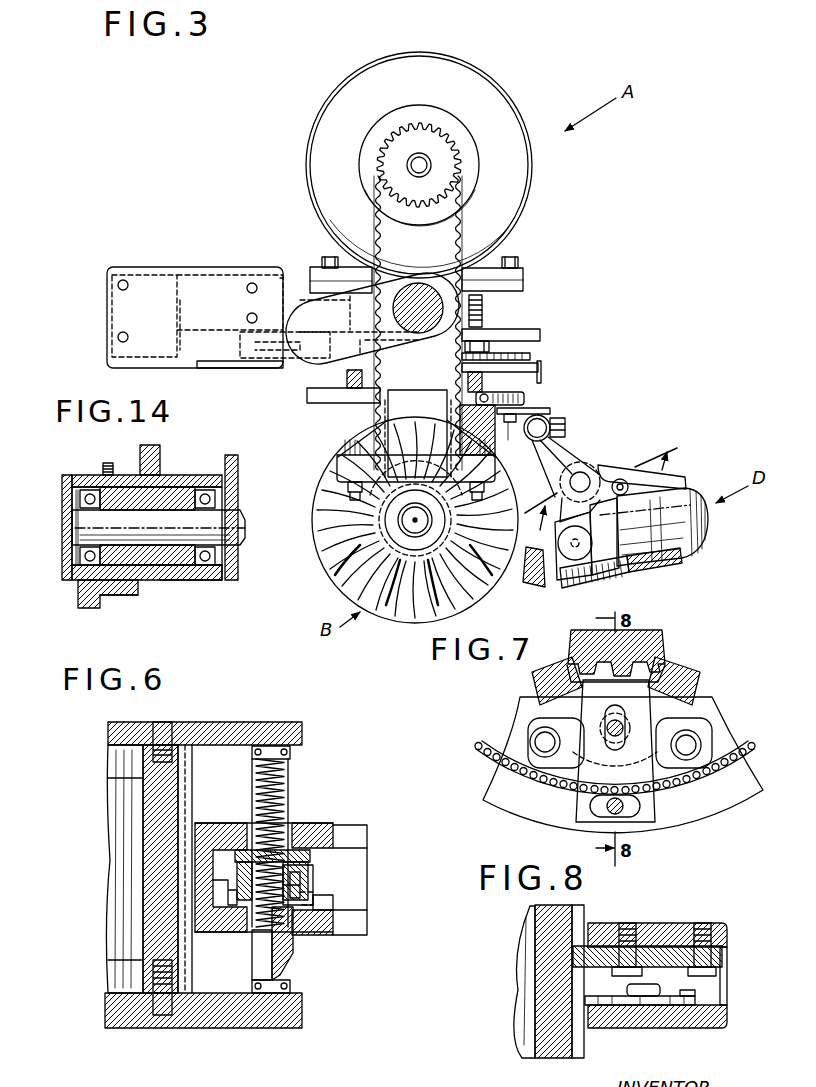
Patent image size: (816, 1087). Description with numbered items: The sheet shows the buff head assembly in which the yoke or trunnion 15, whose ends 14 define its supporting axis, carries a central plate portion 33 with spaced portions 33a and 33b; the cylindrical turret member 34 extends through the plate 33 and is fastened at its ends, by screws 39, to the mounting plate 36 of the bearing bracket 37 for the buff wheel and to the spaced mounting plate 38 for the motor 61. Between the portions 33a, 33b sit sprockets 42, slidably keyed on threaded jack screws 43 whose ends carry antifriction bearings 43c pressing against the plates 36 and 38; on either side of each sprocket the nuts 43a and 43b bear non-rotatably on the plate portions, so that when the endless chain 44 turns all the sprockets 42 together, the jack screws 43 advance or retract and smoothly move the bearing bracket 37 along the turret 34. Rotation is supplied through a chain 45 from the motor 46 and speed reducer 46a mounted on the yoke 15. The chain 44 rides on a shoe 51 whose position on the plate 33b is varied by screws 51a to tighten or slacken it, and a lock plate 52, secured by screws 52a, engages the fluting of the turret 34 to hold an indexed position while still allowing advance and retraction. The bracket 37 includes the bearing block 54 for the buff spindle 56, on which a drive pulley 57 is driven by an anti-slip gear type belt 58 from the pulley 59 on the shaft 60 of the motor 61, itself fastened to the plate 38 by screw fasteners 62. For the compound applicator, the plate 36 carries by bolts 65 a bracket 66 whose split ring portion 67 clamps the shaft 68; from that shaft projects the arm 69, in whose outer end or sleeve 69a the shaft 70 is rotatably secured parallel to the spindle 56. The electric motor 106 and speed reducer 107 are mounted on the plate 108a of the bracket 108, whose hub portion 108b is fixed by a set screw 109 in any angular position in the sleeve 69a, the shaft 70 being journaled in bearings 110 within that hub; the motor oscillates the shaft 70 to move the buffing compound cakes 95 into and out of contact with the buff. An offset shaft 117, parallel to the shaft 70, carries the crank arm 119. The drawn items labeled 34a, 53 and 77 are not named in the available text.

In FIG. 3, the yoke ends 14 is at (424, 330).
In FIG. 7, the yoke or trunnion 15 is at (704, 682).
In FIG. 6, the central plate portion 33 is at (372, 867).
In FIG. 6, the plate portion 33a is at (330, 824).
In FIG. 8, the plate portion 33a is at (688, 923).
In FIG. 6, the plate portion 33b is at (333, 933).
In FIG. 7, the plate portion 33b is at (727, 800).
In FIG. 8, the plate portion 33b is at (729, 1016).
In FIG. 6, the cylindrical turret member 34 is at (140, 813).
In FIG. 7, the cylindrical turret member 34 is at (672, 642).
In FIG. 8, the cylindrical turret member 34 is at (517, 936).
In FIG. 3, the bar 34a is at (526, 399).
In FIG. 3, the mounting plate 36 is at (322, 399).
In FIG. 6, the mounting plate 36 is at (228, 1023).
In FIG. 3, the bearing bracket 37 is at (417, 452).
In FIG. 3, the mounting plate 38 is at (524, 290).
In FIG. 6, the mounting plate 38 is at (245, 723).
In FIG. 6, the screws 39 is at (172, 725).
In FIG. 3, the sprockets 42 is at (490, 347).
In FIG. 6, the sprockets 42 is at (318, 889).
In FIG. 3, the threaded jack screws 43 is at (350, 307).
In FIG. 6, the threaded jack screws 43 is at (289, 788).
In FIG. 6, the nut 43a is at (310, 859).
In FIG. 6, the nut 43b is at (335, 917).
In FIG. 6, the antifriction bearings 43c is at (291, 753).
In FIG. 3, the endless chain 44 is at (531, 357).
In FIG. 7, the endless chain 44 is at (505, 767).
In FIG. 8, the endless chain 44 is at (700, 1001).
In FIG. 3, the chain 45 is at (318, 356).
In FIG. 3, the motor 46 is at (126, 352).
In FIG. 3, the speed reducer 46a is at (212, 246).
In FIG. 7, the shoe 51 is at (690, 722).
In FIG. 8, the shoe 51 is at (648, 1005).
In FIG. 7, the screws 51a is at (545, 742).
In FIG. 8, the screws 51a is at (646, 990).
In FIG. 7, the lock plate 52 is at (625, 702).
In FIG. 8, the lock plate 52 is at (726, 959).
In FIG. 7, the screws 52a is at (608, 726).
In FIG. 8, the screws 52a is at (636, 922).
In FIG. 6, the plate 53 is at (190, 773).
In FIG. 7, the plate 53 is at (663, 673).
In FIG. 8, the plate 53 is at (580, 919).
In FIG. 3, the bearing block 54 is at (326, 552).
In FIG. 3, the buff spindle 56 is at (403, 533).
In FIG. 3, the drive pulley 57 is at (441, 486).
In FIG. 3, the anti-slip gear type belt 58 is at (384, 238).
In FIG. 3, the pulley 59 is at (408, 190).
In FIG. 3, the motor shaft 60 is at (414, 166).
In FIG. 3, the motor 61 is at (326, 101).
In FIG. 3, the screw fasteners 62 is at (326, 258).
In FIG. 3, the bolts 65 is at (509, 422).
In FIG. 3, the bracket 66 is at (552, 411).
In FIG. 3, the split ring portion 67 is at (566, 430).
In FIG. 3, the shaft 68 is at (556, 467).
In FIG. 3, the arm 69 is at (567, 454).
In FIG. 14, the arm 69 is at (78, 607).
In FIG. 3, the outer end / sleeve 69a is at (595, 511).
In FIG. 14, the outer end / sleeve 69a is at (123, 596).
In FIG. 3, the shaft 70 is at (583, 480).
In FIG. 14, the shaft 70 is at (231, 522).
In FIG. 14, the housing wall 77 is at (238, 462).
In FIG. 3, the buffing compound cakes 95 is at (533, 575).
In FIG. 3, the electric motor 106 is at (700, 545).
In FIG. 3, the speed reducer 107 is at (578, 571).
In FIG. 3, the bracket 108 is at (578, 588).
In FIG. 3, the plate 108a is at (624, 580).
In FIG. 14, the plate 108a is at (160, 457).
In FIG. 14, the hub portion 108b is at (197, 581).
In FIG. 14, the set screw 109 is at (107, 463).
In FIG. 14, the bearings 110 is at (68, 490).
In FIG. 3, the shaft 117 is at (663, 479).
In FIG. 3, the crank arm 119 is at (626, 495).